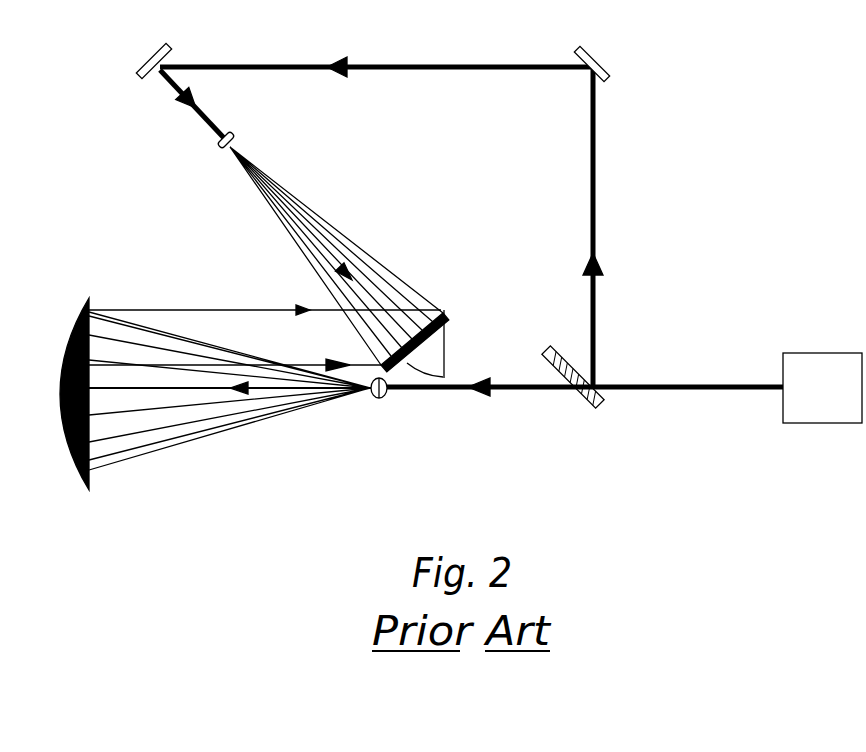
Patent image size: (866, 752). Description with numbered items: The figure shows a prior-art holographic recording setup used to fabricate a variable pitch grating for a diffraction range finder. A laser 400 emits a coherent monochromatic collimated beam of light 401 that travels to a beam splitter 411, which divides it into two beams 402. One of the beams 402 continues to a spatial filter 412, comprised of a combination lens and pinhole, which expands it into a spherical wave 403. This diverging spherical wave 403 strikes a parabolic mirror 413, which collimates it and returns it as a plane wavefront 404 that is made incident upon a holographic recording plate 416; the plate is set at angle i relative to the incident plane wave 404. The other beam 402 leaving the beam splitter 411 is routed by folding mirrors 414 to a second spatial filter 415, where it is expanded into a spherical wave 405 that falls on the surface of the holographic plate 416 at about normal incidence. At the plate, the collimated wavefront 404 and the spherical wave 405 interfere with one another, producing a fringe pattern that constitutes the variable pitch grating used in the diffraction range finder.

The laser 400 is at (832, 353).
The coherent monochromatic collimated beam of light 401 is at (703, 383).
The beams 402 is at (590, 148).
The spherical wave 403 is at (273, 428).
The wavefront 404 is at (213, 310).
The spherical wave 405 is at (352, 237).
The beam splitter 411 is at (600, 408).
The spatial filter 412 is at (378, 400).
The parabolic mirror 413 is at (125, 250).
The folding mirrors 414 is at (140, 62).
The spatial filter 415 is at (218, 143).
The holographic recording plate 416 is at (442, 310).